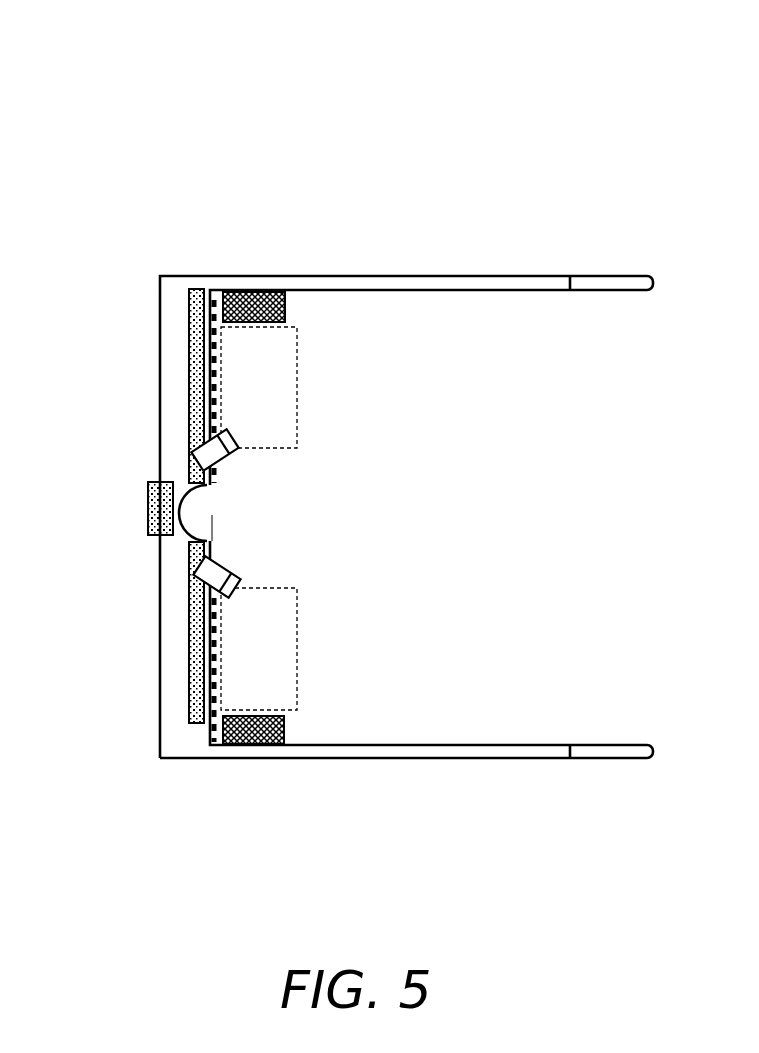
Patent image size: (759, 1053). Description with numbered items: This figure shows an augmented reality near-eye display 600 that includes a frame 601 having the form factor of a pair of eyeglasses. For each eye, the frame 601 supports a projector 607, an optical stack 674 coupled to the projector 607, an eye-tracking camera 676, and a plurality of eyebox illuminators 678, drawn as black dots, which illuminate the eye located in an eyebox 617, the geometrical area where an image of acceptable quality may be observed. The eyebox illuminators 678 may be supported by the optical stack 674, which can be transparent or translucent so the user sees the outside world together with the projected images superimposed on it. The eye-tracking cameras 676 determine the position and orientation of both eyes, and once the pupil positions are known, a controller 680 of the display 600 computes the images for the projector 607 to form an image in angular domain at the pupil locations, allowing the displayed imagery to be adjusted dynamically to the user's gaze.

The AR near-eye display 600 is at (391, 118).
The frame 601 is at (531, 277).
The projector 607 is at (241, 292).
The eyebox 617 is at (278, 395).
The optical stack 674 is at (196, 372).
The eye-tracking camera 676 is at (198, 446).
The eyebox illuminators 678 is at (207, 330).
The controller 680 is at (148, 500).